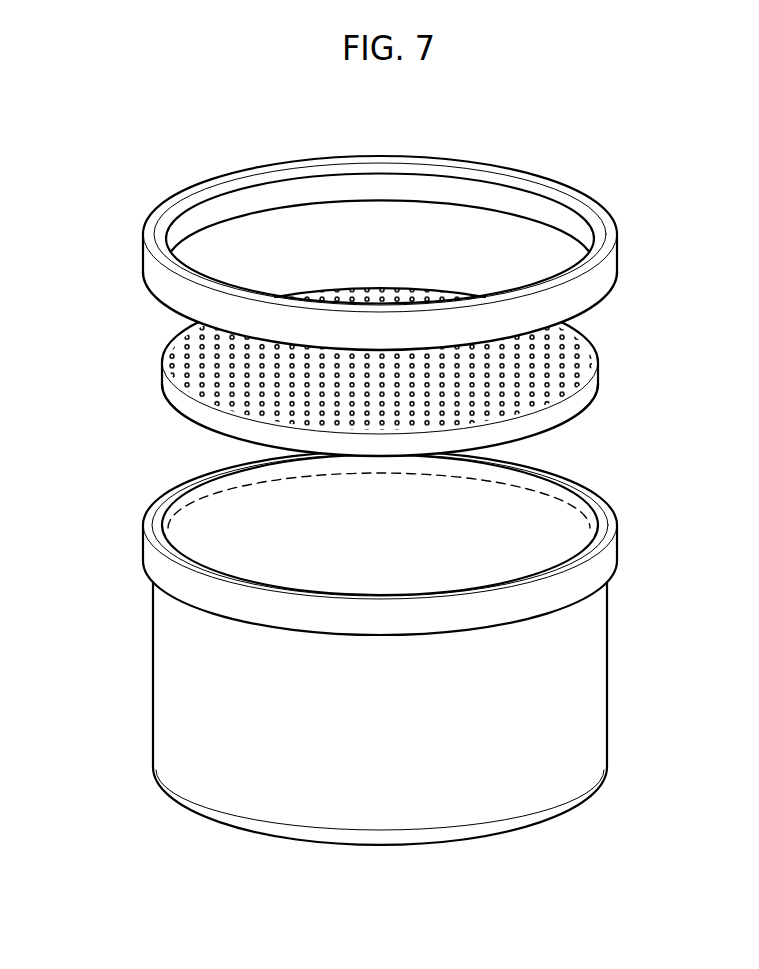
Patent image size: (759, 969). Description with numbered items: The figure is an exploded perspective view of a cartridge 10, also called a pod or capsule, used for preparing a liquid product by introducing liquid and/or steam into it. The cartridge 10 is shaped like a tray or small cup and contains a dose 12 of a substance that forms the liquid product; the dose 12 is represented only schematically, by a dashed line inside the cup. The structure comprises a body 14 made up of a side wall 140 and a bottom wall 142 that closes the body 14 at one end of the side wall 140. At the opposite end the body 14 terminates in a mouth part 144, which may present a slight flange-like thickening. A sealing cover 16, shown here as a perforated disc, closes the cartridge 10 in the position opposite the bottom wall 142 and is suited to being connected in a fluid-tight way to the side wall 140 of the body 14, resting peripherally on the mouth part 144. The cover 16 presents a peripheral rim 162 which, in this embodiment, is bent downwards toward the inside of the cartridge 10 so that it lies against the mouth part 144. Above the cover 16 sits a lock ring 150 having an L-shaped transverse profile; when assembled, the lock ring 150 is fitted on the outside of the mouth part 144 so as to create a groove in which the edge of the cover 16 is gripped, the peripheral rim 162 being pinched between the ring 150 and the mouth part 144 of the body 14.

The cartridge 10 is at (115, 181).
The dose of substance 12 is at (523, 513).
The body 14 is at (444, 659).
The side wall 140 is at (607, 643).
The bottom wall 142 is at (558, 822).
The mouth part 144 is at (623, 558).
The sealing cover 16 is at (430, 370).
The peripheral rim 162 is at (572, 405).
The lock ring 150 is at (603, 242).